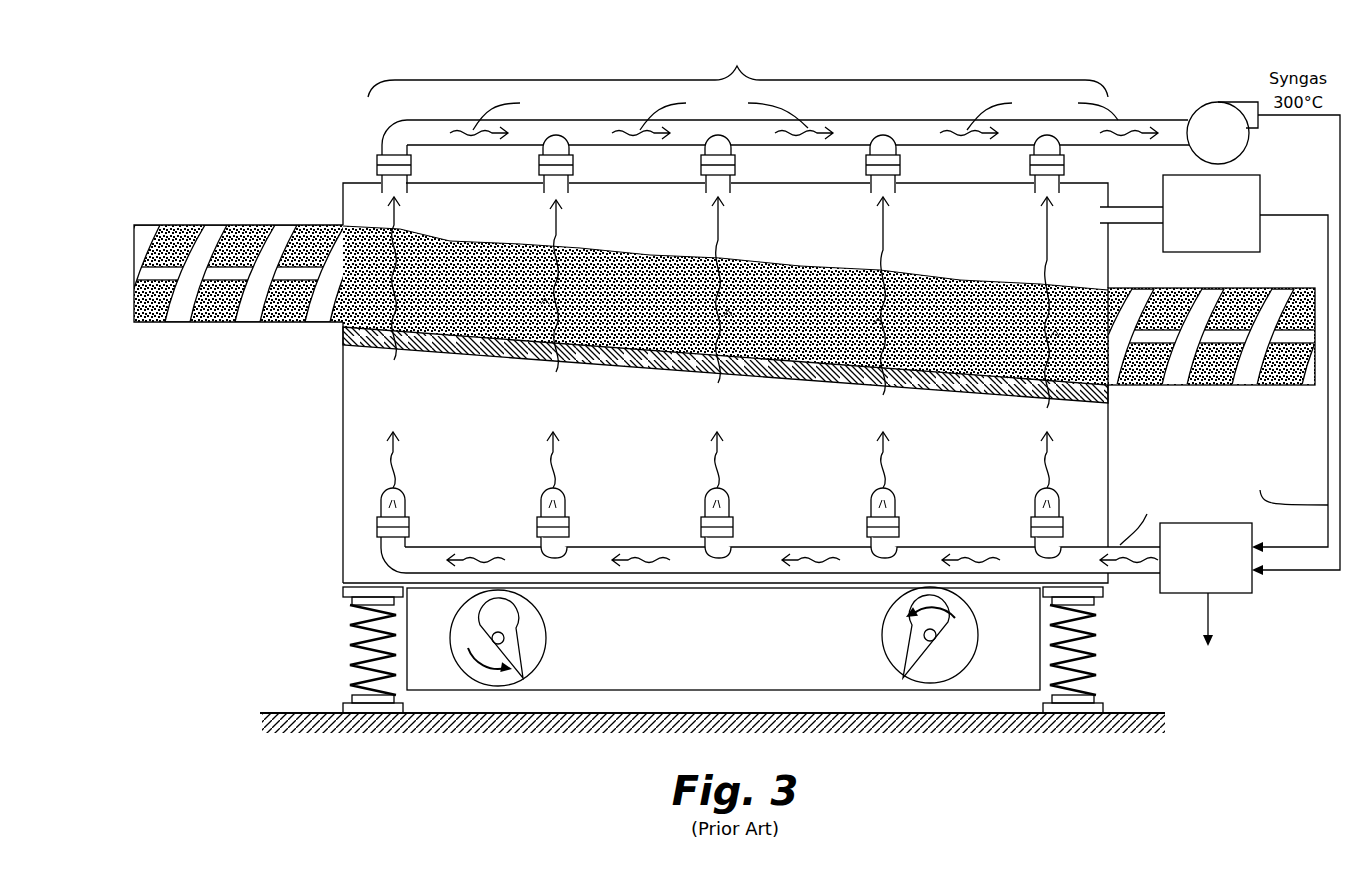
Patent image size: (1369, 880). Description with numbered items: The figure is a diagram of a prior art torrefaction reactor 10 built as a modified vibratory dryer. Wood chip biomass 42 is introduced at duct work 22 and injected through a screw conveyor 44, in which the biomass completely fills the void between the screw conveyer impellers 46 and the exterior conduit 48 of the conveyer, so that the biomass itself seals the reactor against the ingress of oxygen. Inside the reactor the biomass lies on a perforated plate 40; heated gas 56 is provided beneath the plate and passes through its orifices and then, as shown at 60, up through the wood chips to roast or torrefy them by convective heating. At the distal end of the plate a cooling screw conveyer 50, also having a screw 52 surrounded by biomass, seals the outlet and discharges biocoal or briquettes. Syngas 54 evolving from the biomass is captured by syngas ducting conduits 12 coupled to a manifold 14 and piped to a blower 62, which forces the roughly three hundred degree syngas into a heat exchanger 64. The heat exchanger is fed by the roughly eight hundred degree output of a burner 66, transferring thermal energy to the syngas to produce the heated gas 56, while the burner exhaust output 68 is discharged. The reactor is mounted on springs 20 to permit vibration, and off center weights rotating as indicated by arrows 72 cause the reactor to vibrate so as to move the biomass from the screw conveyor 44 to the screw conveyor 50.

The reactor 10 is at (925, 60).
The syngas ducting conduits 12 is at (409, 178).
The manifold 14 is at (857, 134).
The springs 20 is at (895, 642).
The duct work 22 is at (522, 644).
The perforated plate 40 is at (433, 350).
The wood chip biomass 42 is at (725, 290).
The screw conveyor 44 is at (233, 288).
The screw conveyer impellers 46 is at (152, 324).
The exterior conduit 48 is at (262, 225).
The cooling screw conveyer 50 is at (1228, 350).
The screw 52 is at (1284, 288).
The syngas 54 is at (398, 238).
The heated gas 56 is at (397, 466).
The gas passing through biomass 60 is at (545, 362).
The blower 62 is at (1238, 103).
The heat exchanger 64 is at (1228, 588).
The burner 66 is at (1240, 182).
The burner exhaust output 68 is at (1207, 650).
The arrows 72 is at (482, 660).